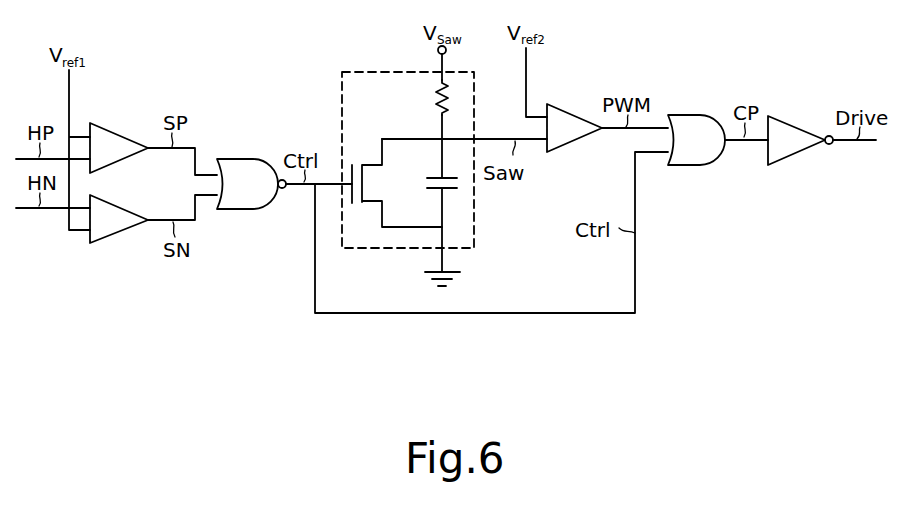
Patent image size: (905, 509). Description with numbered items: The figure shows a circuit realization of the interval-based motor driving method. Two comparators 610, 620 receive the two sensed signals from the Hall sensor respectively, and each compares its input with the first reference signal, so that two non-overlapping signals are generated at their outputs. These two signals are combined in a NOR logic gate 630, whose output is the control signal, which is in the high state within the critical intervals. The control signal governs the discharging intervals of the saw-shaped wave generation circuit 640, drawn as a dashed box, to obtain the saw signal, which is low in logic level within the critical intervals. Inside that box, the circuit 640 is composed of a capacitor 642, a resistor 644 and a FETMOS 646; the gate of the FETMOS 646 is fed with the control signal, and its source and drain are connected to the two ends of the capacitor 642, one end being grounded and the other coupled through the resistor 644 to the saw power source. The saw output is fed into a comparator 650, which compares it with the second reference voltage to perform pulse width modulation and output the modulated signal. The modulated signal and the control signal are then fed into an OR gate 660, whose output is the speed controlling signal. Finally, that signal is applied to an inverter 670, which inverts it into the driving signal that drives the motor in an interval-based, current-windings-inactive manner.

The comparator 610 is at (119, 125).
The comparator 620 is at (119, 242).
The NOR logic gate 630 is at (238, 158).
The saw-shaped wave generation circuit 640 is at (360, 71).
The capacitor 642 is at (450, 190).
The resistor 644 is at (437, 85).
The FETMOS 646 is at (371, 163).
The comparator 650 is at (578, 103).
The OR gate 660 is at (704, 114).
The inverter 670 is at (797, 116).